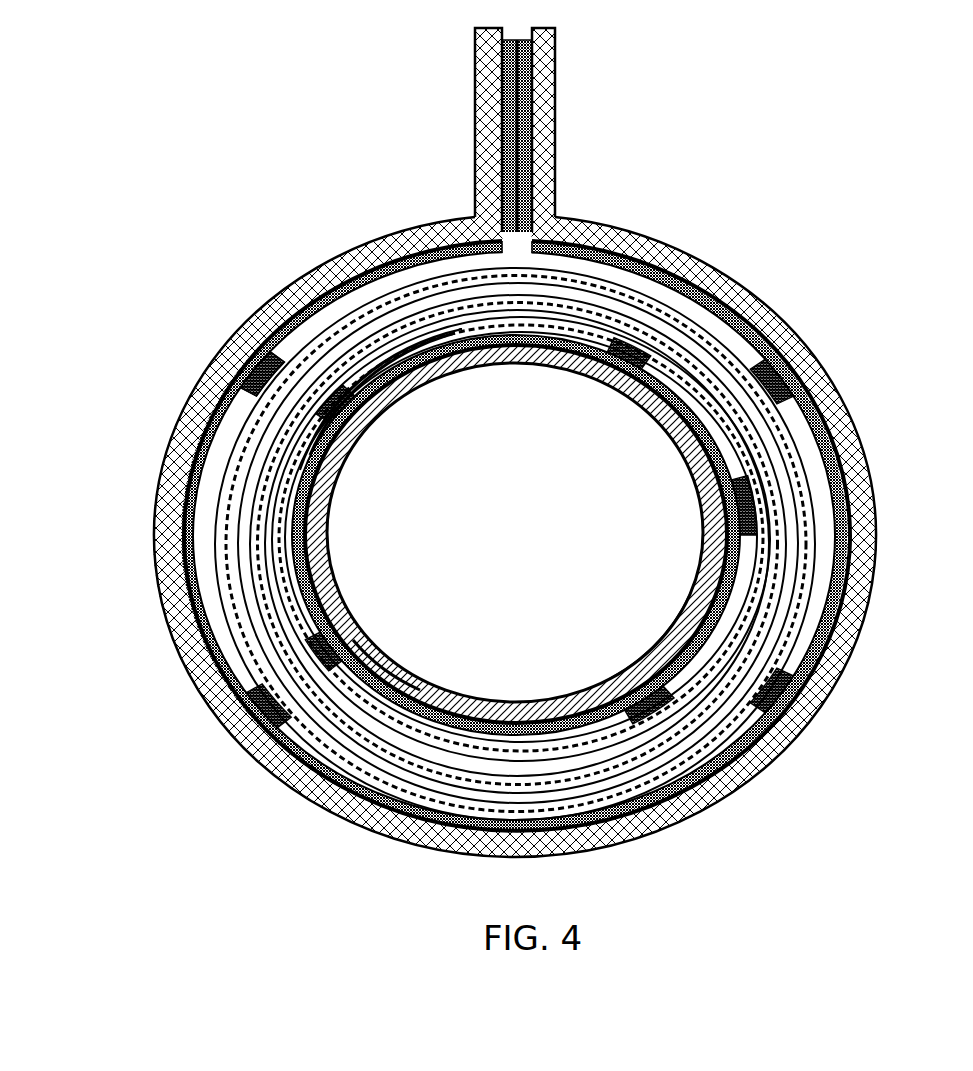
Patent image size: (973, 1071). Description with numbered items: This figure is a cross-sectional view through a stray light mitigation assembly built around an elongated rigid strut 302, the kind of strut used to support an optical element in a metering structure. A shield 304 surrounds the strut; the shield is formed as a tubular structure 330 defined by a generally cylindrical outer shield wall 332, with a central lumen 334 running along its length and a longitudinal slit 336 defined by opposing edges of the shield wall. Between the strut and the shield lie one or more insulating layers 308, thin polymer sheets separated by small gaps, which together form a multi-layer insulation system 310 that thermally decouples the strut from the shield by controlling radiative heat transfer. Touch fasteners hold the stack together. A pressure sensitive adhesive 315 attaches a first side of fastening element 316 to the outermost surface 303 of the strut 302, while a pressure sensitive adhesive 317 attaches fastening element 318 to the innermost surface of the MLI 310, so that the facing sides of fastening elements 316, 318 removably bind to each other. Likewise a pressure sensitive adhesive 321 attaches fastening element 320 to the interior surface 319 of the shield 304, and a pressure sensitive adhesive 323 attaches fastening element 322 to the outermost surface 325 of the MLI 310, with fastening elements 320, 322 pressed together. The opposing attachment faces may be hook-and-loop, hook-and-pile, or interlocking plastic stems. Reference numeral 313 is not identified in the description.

The elongated rigid strut 302 is at (333, 602).
The outermost surface of strut 303 is at (303, 567).
The shield 304 is at (808, 342).
The insulating layers 308 is at (807, 475).
The multi-layer insulation system 310 is at (823, 543).
The inner surface 313 is at (368, 698).
The pressure sensitive adhesive 315 is at (310, 497).
The fastening element 316 is at (323, 458).
The pressure sensitive adhesive 317 is at (385, 370).
The fastening element 318 is at (355, 410).
The interior surface of shield 319 is at (170, 612).
The fastening element 320 is at (847, 418).
The pressure sensitive adhesive 321 is at (178, 542).
The fastening element 322 is at (233, 347).
The pressure sensitive adhesive 323 is at (243, 397).
The outermost surface of MLI 325 is at (227, 445).
The tubular structure 330 is at (730, 231).
The outer shield wall 332 is at (748, 297).
The central lumen 334 is at (531, 550).
The slit 336 is at (523, 237).